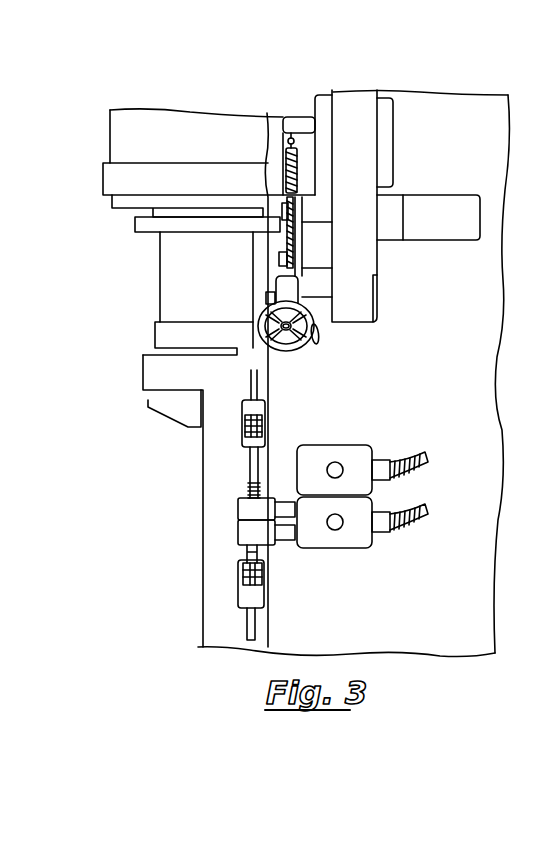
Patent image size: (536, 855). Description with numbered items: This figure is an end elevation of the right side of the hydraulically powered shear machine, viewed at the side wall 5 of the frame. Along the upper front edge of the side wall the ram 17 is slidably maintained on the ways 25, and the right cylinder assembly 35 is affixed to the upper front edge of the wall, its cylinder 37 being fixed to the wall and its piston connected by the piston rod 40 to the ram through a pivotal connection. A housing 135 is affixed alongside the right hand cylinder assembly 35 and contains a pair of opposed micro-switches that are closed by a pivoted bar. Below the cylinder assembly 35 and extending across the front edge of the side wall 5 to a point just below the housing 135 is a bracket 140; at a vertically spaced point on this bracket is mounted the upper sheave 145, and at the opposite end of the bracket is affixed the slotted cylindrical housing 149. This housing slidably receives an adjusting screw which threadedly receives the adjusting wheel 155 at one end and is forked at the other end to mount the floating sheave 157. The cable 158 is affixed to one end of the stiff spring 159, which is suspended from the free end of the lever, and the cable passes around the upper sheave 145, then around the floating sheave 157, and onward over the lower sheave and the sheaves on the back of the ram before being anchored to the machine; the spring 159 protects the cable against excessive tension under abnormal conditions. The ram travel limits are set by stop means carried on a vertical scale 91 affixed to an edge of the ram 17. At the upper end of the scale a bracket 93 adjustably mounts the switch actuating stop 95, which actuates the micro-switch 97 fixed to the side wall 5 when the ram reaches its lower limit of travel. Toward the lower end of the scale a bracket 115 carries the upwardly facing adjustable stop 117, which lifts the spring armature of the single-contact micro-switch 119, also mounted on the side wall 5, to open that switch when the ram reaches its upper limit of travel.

The side wall 5 is at (498, 578).
The ram 17 is at (210, 500).
The ways 25 is at (266, 299).
The right cylinder assembly 35 is at (210, 141).
The cylinder 37 is at (110, 131).
The piston rod 40 is at (172, 260).
The vertical scale 91 is at (250, 464).
The bracket 93 is at (262, 412).
The switch actuating stop 95 is at (265, 438).
The micro-switch 97 is at (245, 510).
The bracket 115 is at (262, 595).
The adjustable stop 117 is at (243, 567).
The micro-switch 119 is at (245, 535).
The housing 135 is at (318, 107).
The bracket 140 is at (318, 238).
The sheave 145 is at (296, 206).
The cylindrical housing 149 is at (298, 289).
The adjusting wheel 155 is at (297, 350).
The floating sheave 157 is at (279, 262).
The cable 158 is at (289, 245).
The spring 159 is at (285, 158).